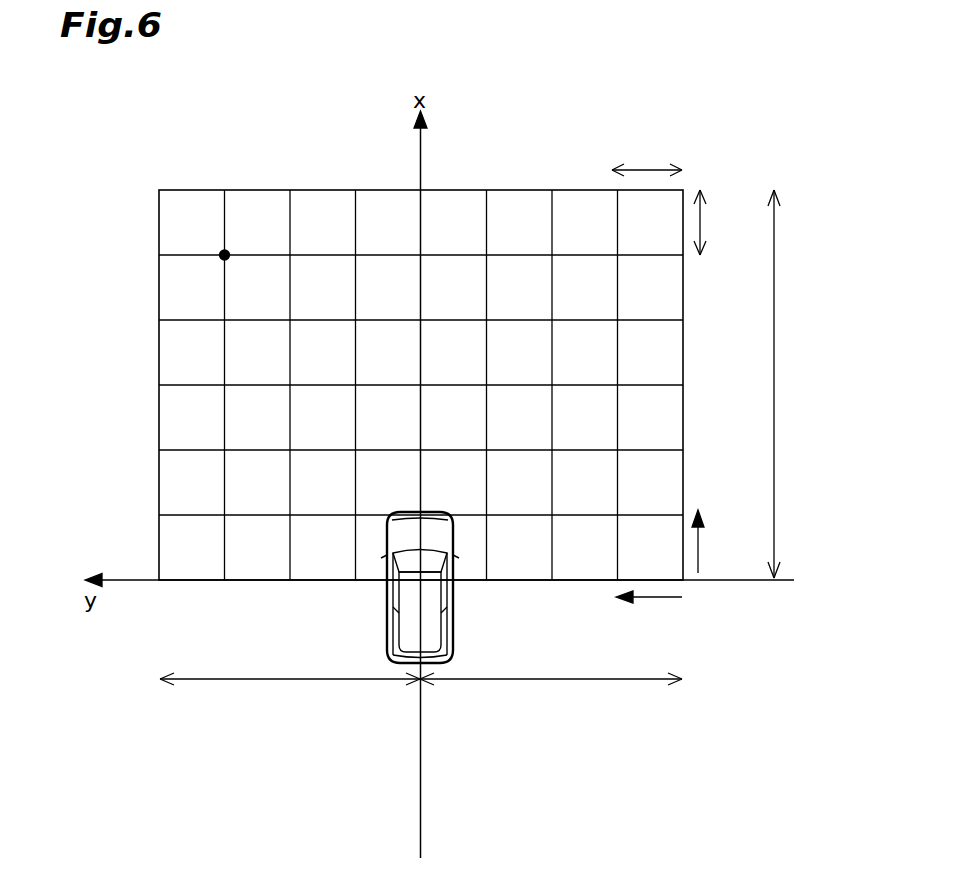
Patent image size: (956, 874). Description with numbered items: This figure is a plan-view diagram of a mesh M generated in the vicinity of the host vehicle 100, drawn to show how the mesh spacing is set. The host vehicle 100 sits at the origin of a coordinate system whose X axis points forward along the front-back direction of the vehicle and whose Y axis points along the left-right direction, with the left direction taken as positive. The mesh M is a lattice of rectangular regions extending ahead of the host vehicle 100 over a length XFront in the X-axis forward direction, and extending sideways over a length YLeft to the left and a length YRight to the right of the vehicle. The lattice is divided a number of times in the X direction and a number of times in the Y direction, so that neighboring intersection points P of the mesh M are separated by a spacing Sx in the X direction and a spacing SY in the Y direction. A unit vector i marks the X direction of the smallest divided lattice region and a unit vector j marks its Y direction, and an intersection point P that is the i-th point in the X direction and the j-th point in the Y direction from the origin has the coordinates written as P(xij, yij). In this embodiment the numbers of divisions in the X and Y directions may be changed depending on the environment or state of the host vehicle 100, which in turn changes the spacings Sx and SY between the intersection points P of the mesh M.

The host vehicle 100 is at (455, 618).
The mesh M is at (579, 190).
The intersection point P is at (223, 253).
The mesh spacing in Y direction SY is at (647, 170).
The mesh spacing in X direction Sx is at (702, 223).
The length of mesh generation region in X-axis forward direction XFront is at (777, 220).
The unit vector in X direction i is at (700, 540).
The unit vector in Y direction j is at (658, 600).
The length of mesh generation region in Y-axis left direction YLeft is at (338, 683).
The length of mesh generation region in Y-axis right direction YRight is at (492, 683).